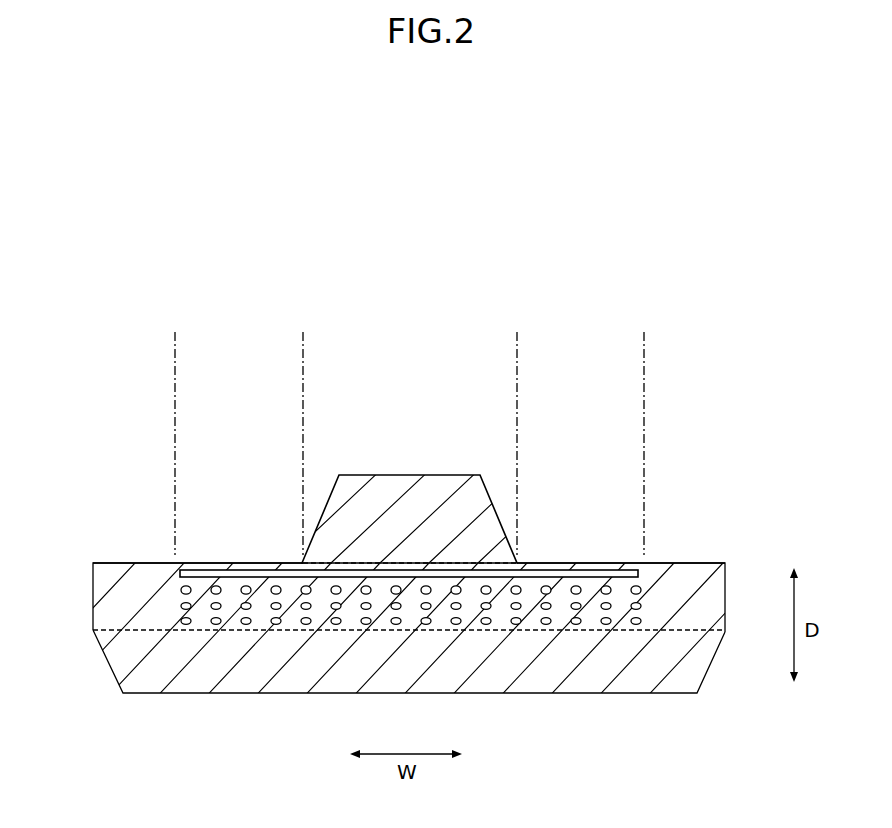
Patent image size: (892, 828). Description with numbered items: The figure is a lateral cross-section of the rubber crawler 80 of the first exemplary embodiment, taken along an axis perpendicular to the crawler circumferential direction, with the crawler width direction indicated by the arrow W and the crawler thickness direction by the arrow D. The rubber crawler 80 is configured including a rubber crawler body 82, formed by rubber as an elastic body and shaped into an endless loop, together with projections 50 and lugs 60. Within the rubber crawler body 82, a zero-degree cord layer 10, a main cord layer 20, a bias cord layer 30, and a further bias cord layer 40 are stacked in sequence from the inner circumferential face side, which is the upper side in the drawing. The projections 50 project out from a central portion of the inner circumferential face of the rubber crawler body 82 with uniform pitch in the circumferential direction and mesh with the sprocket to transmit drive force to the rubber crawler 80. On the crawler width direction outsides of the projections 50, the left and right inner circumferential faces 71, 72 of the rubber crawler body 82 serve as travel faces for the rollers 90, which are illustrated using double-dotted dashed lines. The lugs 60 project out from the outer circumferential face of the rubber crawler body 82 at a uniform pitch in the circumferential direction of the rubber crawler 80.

The 0° cord layer 10 is at (180, 573).
The main cord layer 20 is at (181, 590).
The bias cord layer 30 is at (181, 606).
The bias cord layer 40 is at (181, 622).
The projections 50 is at (410, 475).
The lugs 60 is at (708, 663).
The inner circumferential face 71 is at (238, 566).
The inner circumferential face 72 is at (596, 566).
The rubber crawler 80 is at (690, 448).
The rubber crawler body 82 is at (727, 590).
The rollers 90 is at (517, 352).